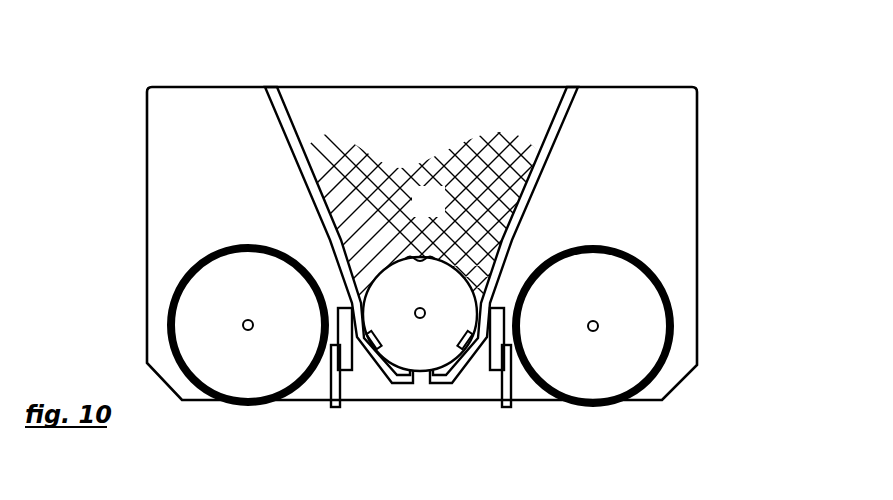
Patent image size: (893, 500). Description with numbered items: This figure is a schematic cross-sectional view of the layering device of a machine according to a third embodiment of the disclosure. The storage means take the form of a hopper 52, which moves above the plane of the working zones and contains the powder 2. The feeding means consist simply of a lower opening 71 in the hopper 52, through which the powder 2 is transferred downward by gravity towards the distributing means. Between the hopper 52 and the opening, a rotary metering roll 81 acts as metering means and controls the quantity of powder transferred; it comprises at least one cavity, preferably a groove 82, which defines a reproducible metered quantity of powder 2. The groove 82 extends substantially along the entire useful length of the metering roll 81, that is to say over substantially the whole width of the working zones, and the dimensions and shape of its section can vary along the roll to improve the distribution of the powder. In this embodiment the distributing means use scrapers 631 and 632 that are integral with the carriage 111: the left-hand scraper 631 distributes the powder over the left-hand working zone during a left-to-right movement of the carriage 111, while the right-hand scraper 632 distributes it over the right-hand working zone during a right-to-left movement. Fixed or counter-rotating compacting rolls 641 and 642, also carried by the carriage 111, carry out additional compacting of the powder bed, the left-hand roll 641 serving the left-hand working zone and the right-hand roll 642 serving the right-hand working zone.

The powder 2 is at (438, 212).
The hopper 52 is at (283, 103).
The lower opening 71 is at (420, 376).
The rotary metering roll 81 is at (397, 278).
The groove 82 is at (487, 255).
The carriage 111 is at (637, 123).
The left-hand scraper 631 is at (340, 380).
The right-hand scraper 632 is at (510, 383).
The left-hand compacting roll 641 is at (203, 308).
The right-hand compacting roll 642 is at (642, 335).